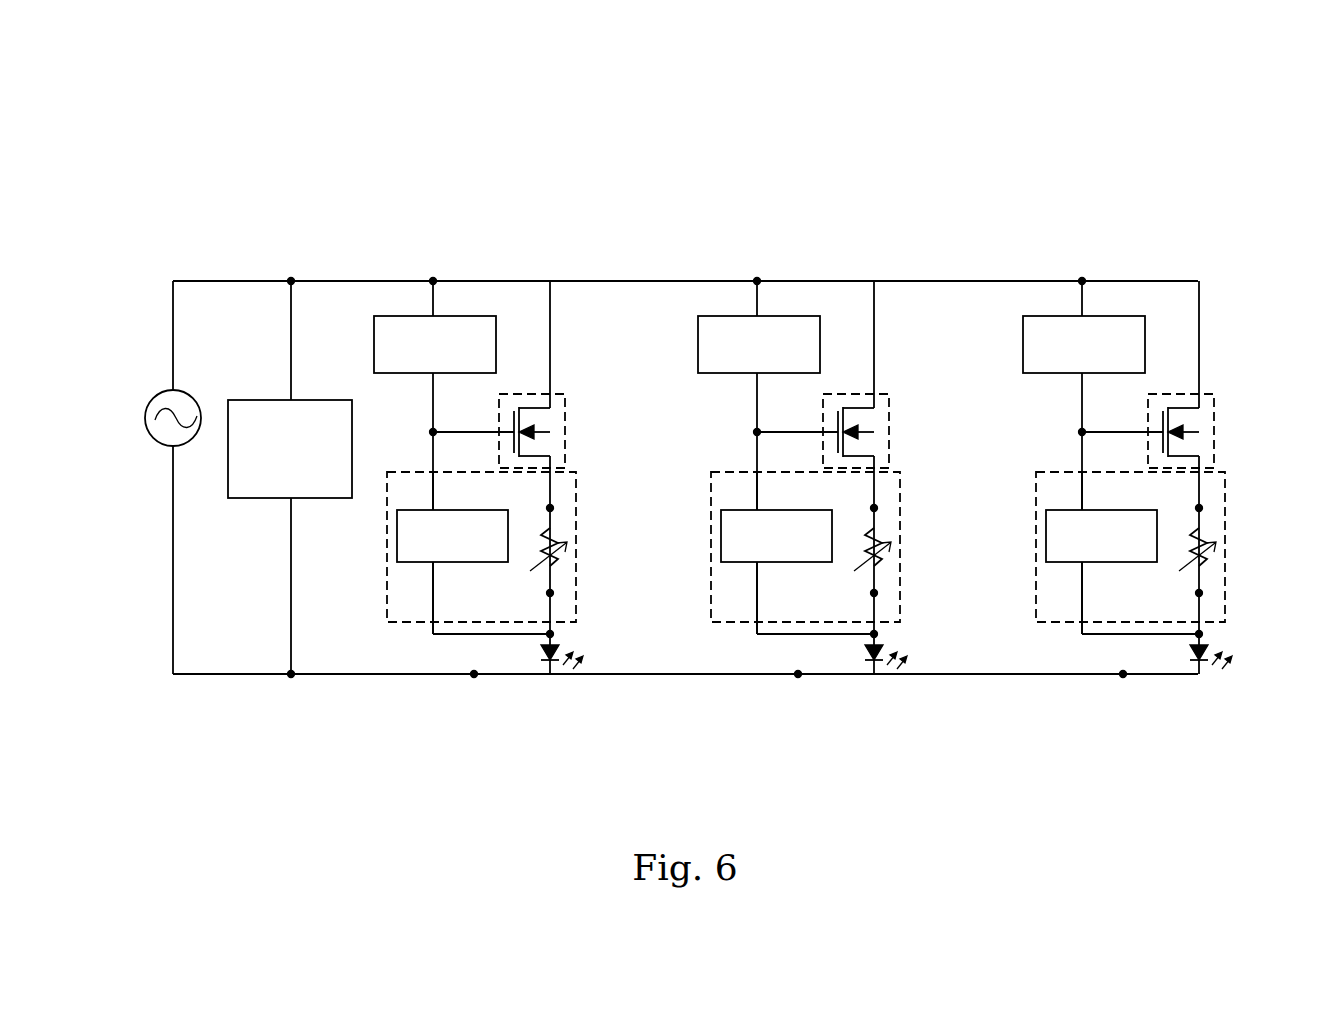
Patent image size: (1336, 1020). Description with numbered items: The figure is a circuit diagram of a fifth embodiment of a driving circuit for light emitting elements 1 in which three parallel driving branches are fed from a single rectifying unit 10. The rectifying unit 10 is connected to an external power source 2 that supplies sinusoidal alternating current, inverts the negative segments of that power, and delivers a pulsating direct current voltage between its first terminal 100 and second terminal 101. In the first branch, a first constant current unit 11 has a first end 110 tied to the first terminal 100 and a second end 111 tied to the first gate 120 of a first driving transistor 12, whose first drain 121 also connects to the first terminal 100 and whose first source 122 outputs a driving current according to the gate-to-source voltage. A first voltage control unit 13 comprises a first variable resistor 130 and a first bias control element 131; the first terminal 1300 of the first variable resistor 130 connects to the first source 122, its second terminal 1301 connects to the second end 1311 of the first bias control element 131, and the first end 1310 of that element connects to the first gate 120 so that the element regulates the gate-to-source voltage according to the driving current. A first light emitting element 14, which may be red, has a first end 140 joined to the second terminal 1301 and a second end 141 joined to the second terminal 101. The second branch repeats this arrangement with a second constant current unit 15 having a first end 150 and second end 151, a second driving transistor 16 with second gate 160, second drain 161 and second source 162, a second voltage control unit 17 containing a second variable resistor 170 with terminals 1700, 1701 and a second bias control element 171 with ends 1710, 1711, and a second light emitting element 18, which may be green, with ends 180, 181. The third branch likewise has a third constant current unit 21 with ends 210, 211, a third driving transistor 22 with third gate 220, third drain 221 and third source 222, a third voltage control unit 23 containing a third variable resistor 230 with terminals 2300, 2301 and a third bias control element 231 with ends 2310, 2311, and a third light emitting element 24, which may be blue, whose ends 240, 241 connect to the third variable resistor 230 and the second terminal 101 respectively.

The driving circuit for light emitting elements 1 is at (1180, 150).
The external power source 2 is at (161, 392).
The rectifying unit 10 is at (271, 399).
The first terminal 100 is at (291, 279).
The second terminal 101 is at (291, 677).
The first constant current unit 11 is at (468, 316).
The first end 110 is at (433, 279).
The second end 111 is at (431, 430).
The first driving transistor 12 is at (560, 394).
The first gate 120 is at (513, 430).
The first drain 121 is at (520, 407).
The first source 122 is at (518, 458).
The first voltage control unit 13 is at (577, 472).
The first bias control element 131 is at (397, 535).
The first end 1310 is at (432, 486).
The second end 1311 is at (432, 592).
The first variable resistor 130 is at (560, 542).
The first terminal 1300 is at (553, 507).
The second terminal 1301 is at (553, 592).
The first light emitting element 14 is at (560, 650).
The first end 140 is at (553, 632).
The second end 141 is at (474, 677).
The second constant current unit 15 is at (773, 331).
The first end 150 is at (779, 250).
The second end 151 is at (768, 407).
The second driving transistor 16 is at (879, 413).
The second gate 160 is at (802, 423).
The second drain 161 is at (888, 370).
The second source 162 is at (830, 467).
The second voltage control unit 17 is at (843, 531).
The second bias control element 171 is at (744, 566).
The first end 1710 is at (727, 471).
The second end 1711 is at (725, 608).
The second variable resistor 170 is at (920, 547).
The first terminal 1700 is at (934, 501).
The second terminal 1701 is at (934, 583).
The second light emitting element 18 is at (907, 649).
The first end 180 is at (929, 618).
The second end 181 is at (786, 712).
The third constant current unit 21 is at (1098, 331).
The first end 210 is at (1104, 250).
The second end 211 is at (1093, 407).
The third driving transistor 22 is at (1204, 413).
The third gate 220 is at (1127, 423).
The third drain 221 is at (1213, 370).
The third source 222 is at (1155, 467).
The third voltage control unit 23 is at (1168, 531).
The third bias control element 231 is at (1069, 566).
The first end 2310 is at (1052, 471).
The second end 2311 is at (1050, 608).
The third variable resistor 230 is at (1245, 547).
The first terminal 2300 is at (1259, 501).
The second terminal 2301 is at (1259, 583).
The third light emitting element 24 is at (1232, 649).
The first end 240 is at (1254, 618).
The second end 241 is at (1111, 712).